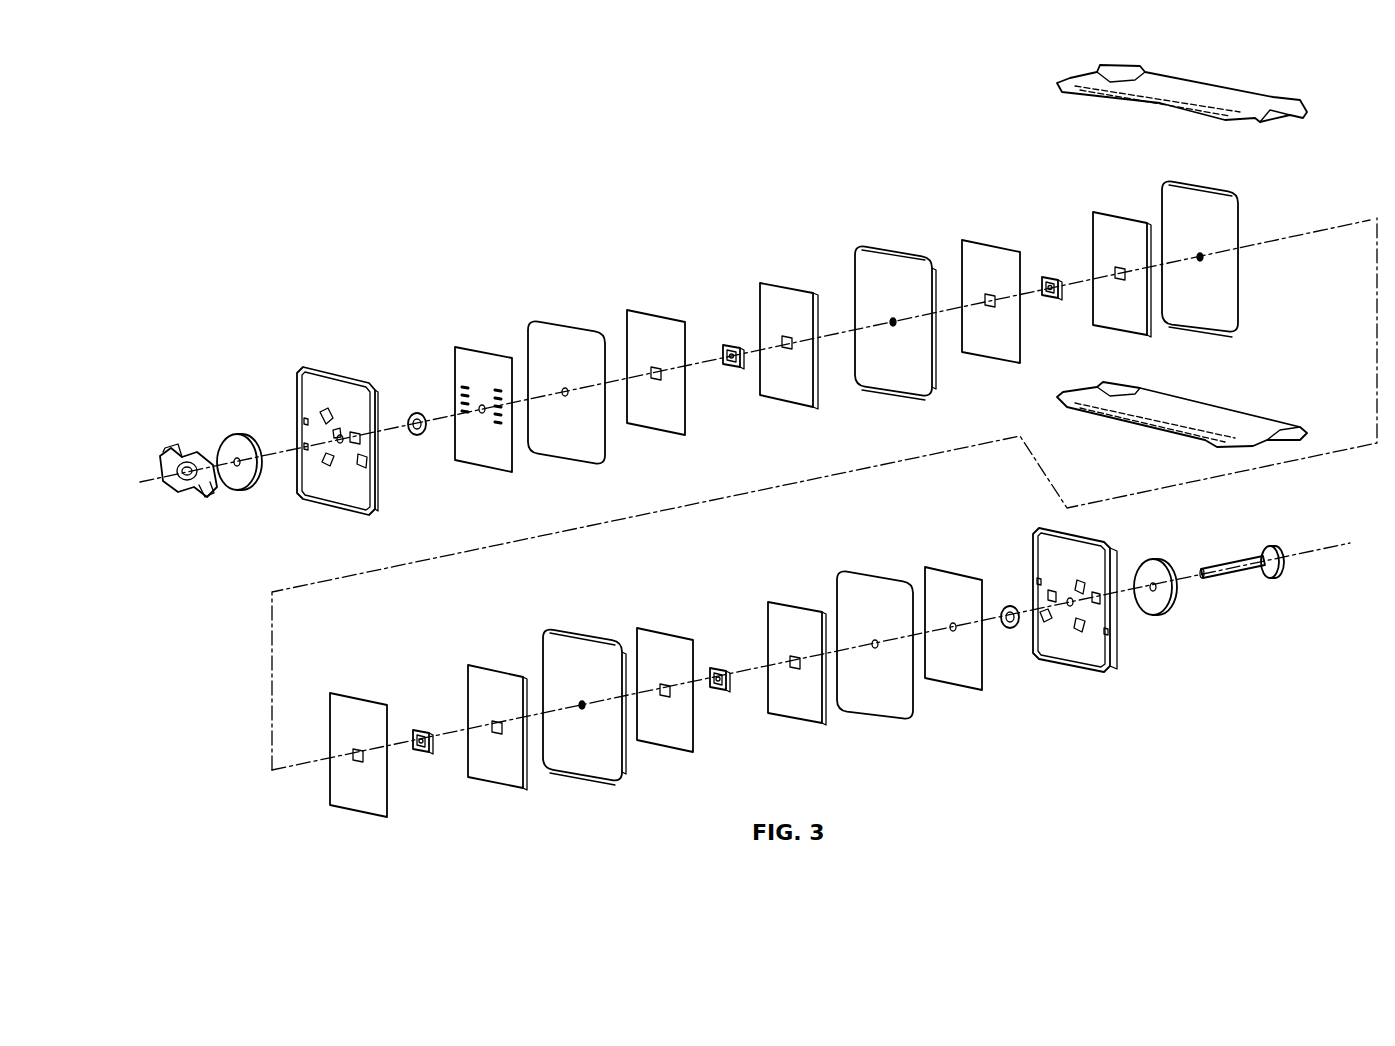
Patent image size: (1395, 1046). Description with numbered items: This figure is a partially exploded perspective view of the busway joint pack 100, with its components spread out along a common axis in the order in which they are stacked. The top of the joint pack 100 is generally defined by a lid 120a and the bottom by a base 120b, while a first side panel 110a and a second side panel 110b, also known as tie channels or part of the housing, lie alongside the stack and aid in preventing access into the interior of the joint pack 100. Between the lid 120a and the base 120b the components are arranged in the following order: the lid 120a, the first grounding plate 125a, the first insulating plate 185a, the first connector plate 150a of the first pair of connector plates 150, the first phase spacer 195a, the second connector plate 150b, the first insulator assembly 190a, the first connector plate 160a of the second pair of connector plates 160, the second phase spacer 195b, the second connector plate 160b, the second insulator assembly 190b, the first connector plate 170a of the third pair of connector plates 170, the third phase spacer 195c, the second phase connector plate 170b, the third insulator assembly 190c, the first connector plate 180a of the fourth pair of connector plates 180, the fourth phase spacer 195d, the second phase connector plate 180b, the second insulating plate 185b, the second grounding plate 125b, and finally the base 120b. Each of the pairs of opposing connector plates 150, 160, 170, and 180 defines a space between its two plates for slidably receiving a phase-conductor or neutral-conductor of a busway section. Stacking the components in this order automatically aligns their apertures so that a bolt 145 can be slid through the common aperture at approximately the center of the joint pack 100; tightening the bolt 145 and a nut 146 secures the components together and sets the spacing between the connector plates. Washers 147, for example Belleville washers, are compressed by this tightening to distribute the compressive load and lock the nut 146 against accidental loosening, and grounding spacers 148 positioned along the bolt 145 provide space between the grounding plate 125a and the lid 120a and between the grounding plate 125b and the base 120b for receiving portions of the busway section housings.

The busway joint pack 100 is at (290, 146).
The first side panel 110a is at (1057, 82).
The second side panel 110b is at (1057, 397).
The lid 120a is at (1082, 643).
The base 120b is at (328, 390).
The first grounding plate 125a is at (953, 657).
The second grounding plate 125b is at (473, 367).
The bolt 145 is at (1240, 572).
The nut 146 is at (177, 457).
The washers 147 is at (237, 447).
The grounding spacers 148 is at (412, 412).
The first pair of opposing connector plates 150 is at (830, 600).
The first connector plate 150a is at (795, 683).
The second connector plate 150b is at (670, 720).
The second pair of opposing connector plates 160 is at (527, 663).
The first connector plate 160a is at (495, 755).
The second connector plate 160b is at (357, 772).
The third pair of opposing connector plates 170 is at (1147, 140).
The first connector plate 170a is at (1108, 227).
The second phase connector plate 170b is at (977, 255).
The fourth pair of opposing connector plates 180 is at (813, 203).
The first connector plate 180a is at (780, 297).
The second phase connector plate 180b is at (640, 323).
The first insulating plate 185a is at (880, 670).
The second insulating plate 185b is at (558, 342).
The first insulator assembly 190a is at (582, 743).
The second insulator assembly 190b is at (1185, 217).
The third insulator assembly 190c is at (882, 262).
The first phase spacer 195a is at (720, 690).
The second phase spacer 195b is at (423, 757).
The third phase spacer 195c is at (1043, 277).
The fourth phase spacer 195d is at (725, 343).